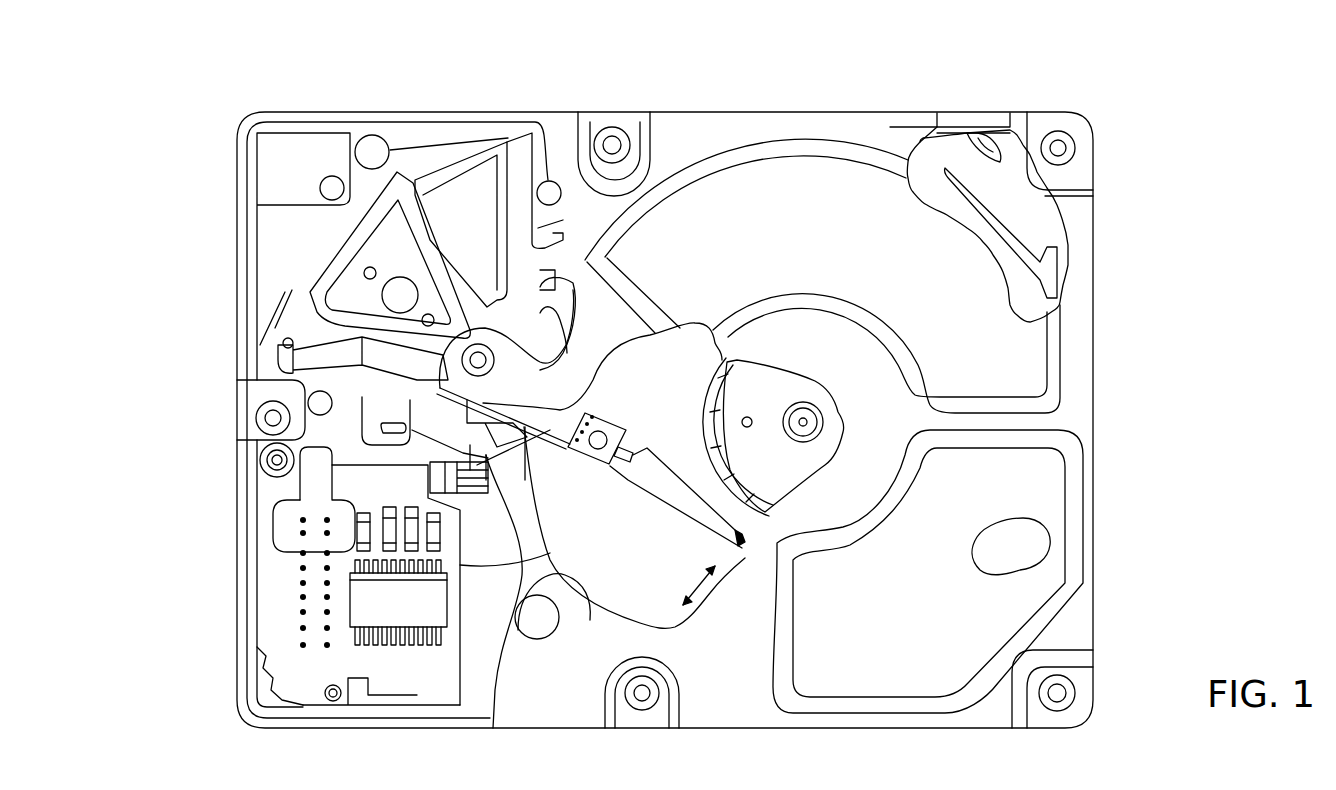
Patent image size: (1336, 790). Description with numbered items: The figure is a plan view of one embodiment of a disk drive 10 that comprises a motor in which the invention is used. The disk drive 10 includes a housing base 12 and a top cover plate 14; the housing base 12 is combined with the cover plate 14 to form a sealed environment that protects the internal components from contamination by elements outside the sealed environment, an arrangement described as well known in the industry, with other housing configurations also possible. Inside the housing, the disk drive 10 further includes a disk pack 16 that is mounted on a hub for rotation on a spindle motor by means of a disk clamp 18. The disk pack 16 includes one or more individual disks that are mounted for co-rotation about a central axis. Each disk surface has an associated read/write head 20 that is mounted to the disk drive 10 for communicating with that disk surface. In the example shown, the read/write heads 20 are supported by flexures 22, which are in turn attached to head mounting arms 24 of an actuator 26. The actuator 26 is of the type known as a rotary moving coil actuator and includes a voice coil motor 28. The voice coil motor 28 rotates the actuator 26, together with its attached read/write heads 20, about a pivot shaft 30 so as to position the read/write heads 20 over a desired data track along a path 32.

The disk drive 10 is at (193, 102).
The housing base 12 is at (380, 728).
The top cover plate 14 is at (1073, 417).
The disk pack 16 is at (528, 727).
The disk clamp 18 is at (778, 465).
The read/write head 20 is at (748, 560).
The flexure 22 is at (667, 490).
The head mounting arm 24 is at (400, 436).
The actuator 26 is at (533, 125).
The voice coil motor 28 is at (447, 165).
The pivot shaft 30 is at (475, 360).
The path 32 is at (745, 560).